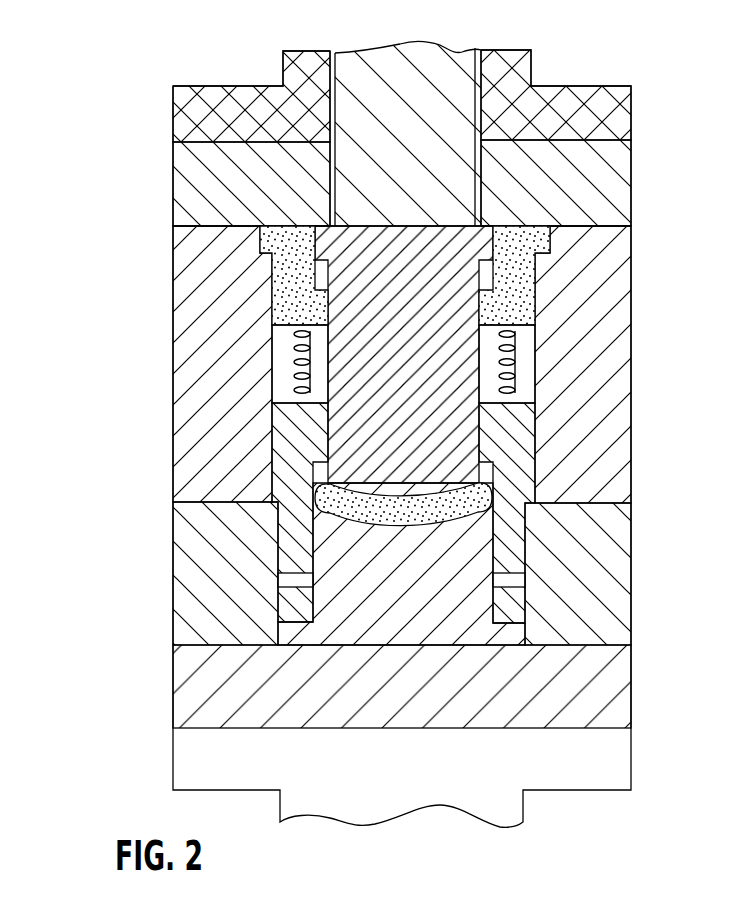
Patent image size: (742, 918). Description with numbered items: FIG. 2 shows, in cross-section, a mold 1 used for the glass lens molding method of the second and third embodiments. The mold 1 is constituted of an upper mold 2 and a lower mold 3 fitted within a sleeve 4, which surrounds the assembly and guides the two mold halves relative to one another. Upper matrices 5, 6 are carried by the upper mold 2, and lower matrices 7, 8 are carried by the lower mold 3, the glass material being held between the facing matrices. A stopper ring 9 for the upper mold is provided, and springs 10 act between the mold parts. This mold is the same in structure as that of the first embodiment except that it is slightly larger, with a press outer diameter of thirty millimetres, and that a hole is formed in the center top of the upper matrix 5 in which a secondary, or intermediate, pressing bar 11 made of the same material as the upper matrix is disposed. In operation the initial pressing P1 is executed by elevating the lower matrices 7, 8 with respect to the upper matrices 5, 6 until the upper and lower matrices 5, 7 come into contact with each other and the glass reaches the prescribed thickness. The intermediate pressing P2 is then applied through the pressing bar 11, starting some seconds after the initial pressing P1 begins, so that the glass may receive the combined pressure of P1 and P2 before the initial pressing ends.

The mold 1 is at (622, 64).
The upper mold 2 is at (367, 317).
The lower mold 3 is at (350, 617).
The sleeve 4 is at (520, 452).
The upper matrix 5 is at (612, 265).
The upper matrix 6 is at (612, 186).
The lower matrix 7 is at (612, 577).
The lower matrix 8 is at (612, 692).
The stopper ring 9 is at (525, 303).
The spring 10 is at (515, 370).
The secondary pressing bar 11 is at (432, 67).
The initial pressing P1 is at (229, 515).
The intermediate pressing P2 is at (403, 214).